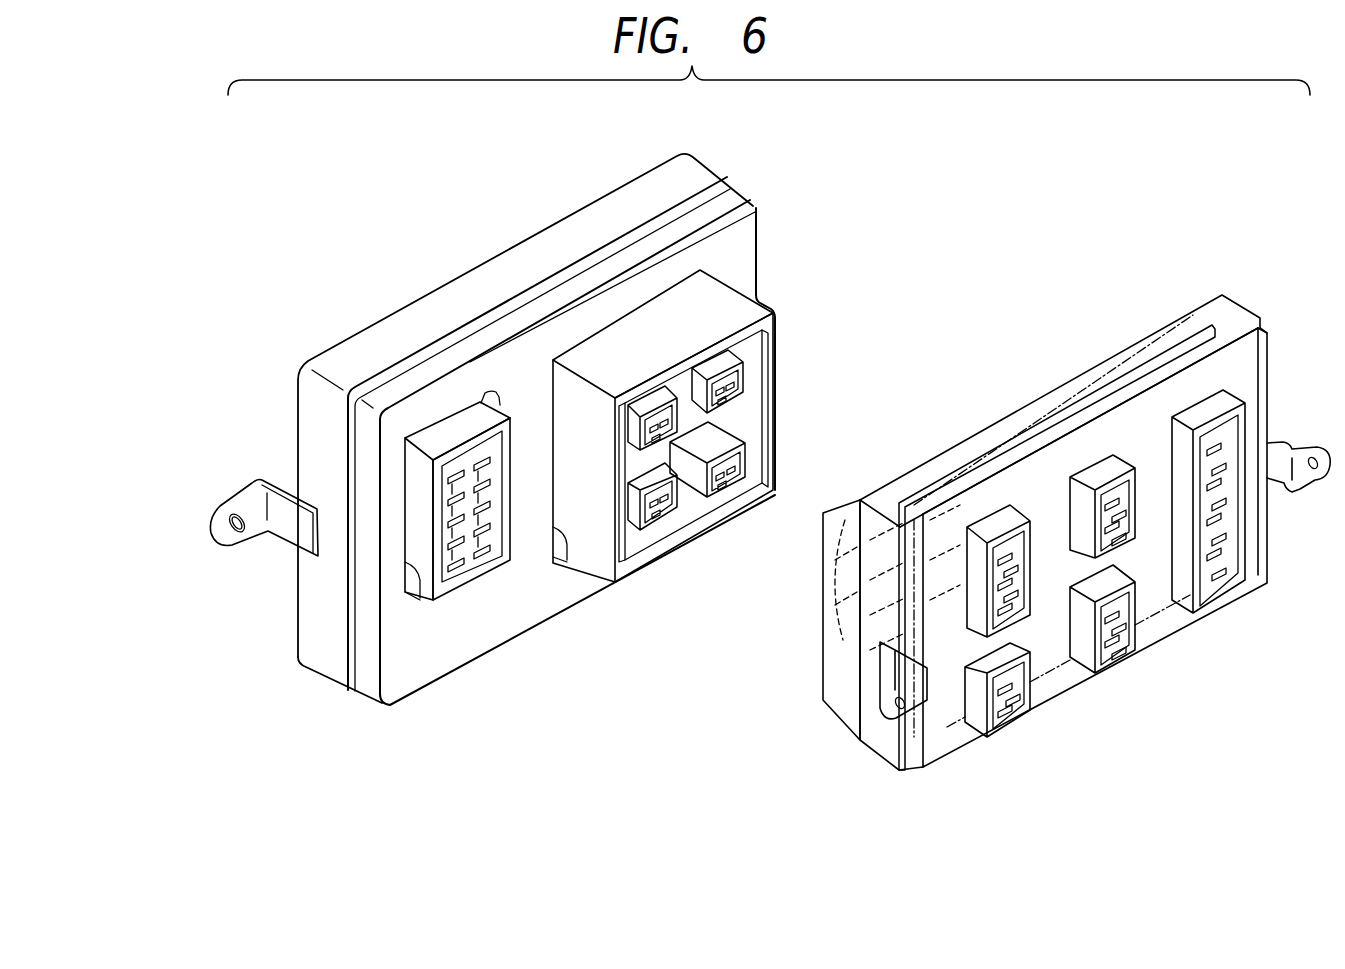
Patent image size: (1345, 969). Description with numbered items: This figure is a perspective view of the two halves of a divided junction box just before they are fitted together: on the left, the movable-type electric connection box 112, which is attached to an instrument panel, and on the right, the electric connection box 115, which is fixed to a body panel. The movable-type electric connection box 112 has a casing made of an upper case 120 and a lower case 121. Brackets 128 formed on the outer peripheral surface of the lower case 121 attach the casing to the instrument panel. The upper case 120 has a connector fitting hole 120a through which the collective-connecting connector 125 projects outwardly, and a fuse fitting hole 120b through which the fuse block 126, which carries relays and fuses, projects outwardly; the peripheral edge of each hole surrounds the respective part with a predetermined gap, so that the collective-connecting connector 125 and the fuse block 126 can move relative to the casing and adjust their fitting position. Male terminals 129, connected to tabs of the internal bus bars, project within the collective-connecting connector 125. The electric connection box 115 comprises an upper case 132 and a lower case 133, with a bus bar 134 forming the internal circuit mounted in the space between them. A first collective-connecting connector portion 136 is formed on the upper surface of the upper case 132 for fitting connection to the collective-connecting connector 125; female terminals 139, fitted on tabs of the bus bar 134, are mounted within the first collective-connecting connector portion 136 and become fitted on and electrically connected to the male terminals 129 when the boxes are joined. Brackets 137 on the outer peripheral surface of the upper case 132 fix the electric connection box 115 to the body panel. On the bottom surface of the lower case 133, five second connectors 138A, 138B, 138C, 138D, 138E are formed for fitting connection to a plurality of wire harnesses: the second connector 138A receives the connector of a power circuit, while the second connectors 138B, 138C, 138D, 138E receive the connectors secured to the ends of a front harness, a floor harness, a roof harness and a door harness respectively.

The movable-type electric connection box 112 is at (732, 154).
The electric connection box 115 is at (1229, 284).
The upper case 120 is at (388, 707).
The connector fitting hole 120a is at (568, 556).
The fuse fitting hole 120b is at (414, 598).
The lower case 121 is at (308, 665).
The collective-connecting connector 125 is at (666, 553).
The fuse block 126 is at (480, 578).
The brackets 128 is at (209, 514).
The male terminals 129 is at (669, 519).
The upper case 132 is at (1150, 333).
The lower case 133 is at (951, 741).
The bus bar 134 is at (1192, 316).
The first collective-connecting connector portion 136 is at (827, 677).
The brackets 137 is at (889, 716).
The second connector 138A is at (1247, 577).
The second connector 138B is at (1011, 722).
The second connector 138C is at (1001, 520).
The second connector 138D is at (1119, 664).
The second connector 138E is at (1102, 468).
The female terminals 139 is at (862, 492).